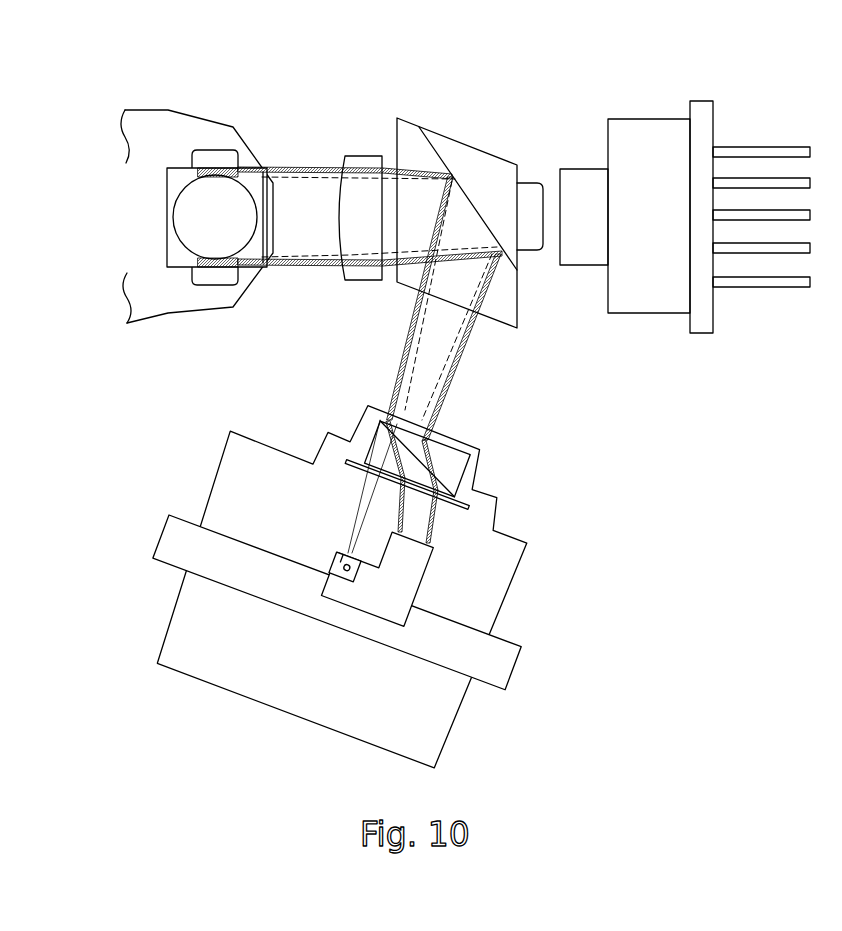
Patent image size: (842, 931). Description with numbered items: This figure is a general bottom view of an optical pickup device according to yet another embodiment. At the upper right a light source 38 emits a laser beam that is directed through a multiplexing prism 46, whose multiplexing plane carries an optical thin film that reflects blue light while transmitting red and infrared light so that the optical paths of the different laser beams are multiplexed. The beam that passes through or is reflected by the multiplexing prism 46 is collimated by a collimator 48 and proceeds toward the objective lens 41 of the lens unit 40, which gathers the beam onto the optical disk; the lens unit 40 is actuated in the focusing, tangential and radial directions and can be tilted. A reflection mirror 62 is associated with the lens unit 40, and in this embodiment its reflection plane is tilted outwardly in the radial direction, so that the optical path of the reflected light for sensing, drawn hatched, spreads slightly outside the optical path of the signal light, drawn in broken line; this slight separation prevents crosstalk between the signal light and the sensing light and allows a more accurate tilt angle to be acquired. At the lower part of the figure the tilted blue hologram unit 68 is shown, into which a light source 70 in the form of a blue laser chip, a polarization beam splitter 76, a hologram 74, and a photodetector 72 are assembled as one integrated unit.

The light source 38 is at (647, 313).
The lens unit 40 is at (223, 137).
The objective lens 41 is at (197, 223).
The multiplexing prism 46 is at (470, 156).
The collimator 48 is at (365, 150).
The reflection mirror 62 is at (200, 153).
The blue hologram unit 68 is at (481, 728).
The light source 70 is at (340, 560).
The photodetector 72 is at (423, 555).
The hologram 74 is at (468, 497).
The polarization beam splitter 76 is at (457, 460).